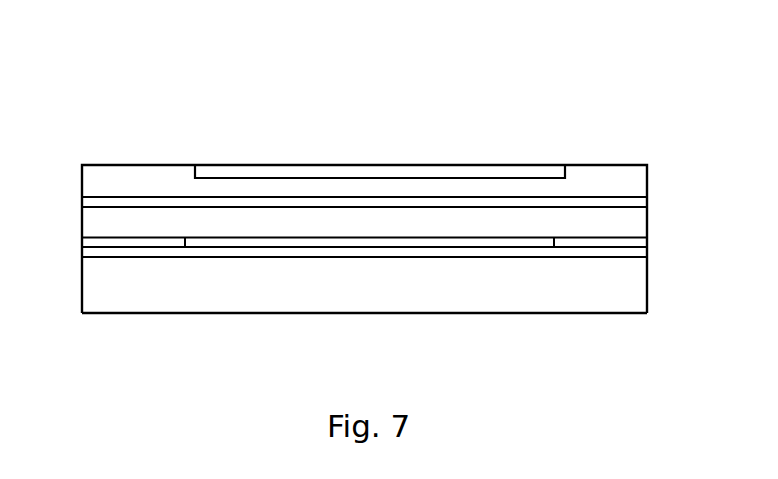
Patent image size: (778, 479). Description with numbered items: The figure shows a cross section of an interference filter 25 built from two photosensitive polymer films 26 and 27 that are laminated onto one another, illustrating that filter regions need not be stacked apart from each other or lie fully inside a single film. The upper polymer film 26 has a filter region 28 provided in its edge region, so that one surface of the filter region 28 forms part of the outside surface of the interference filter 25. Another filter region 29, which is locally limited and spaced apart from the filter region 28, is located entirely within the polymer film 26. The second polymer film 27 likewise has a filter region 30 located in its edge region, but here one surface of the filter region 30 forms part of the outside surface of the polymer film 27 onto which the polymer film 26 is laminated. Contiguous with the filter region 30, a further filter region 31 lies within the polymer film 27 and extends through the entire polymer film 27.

The interference filter 25 is at (545, 77).
The photosensitive polymer film 26 is at (580, 165).
The second polymer film 27 is at (572, 313).
The filter region 28 is at (330, 165).
The filter region 29 is at (133, 197).
The filter region 30 is at (205, 238).
The filter region 31 is at (205, 258).